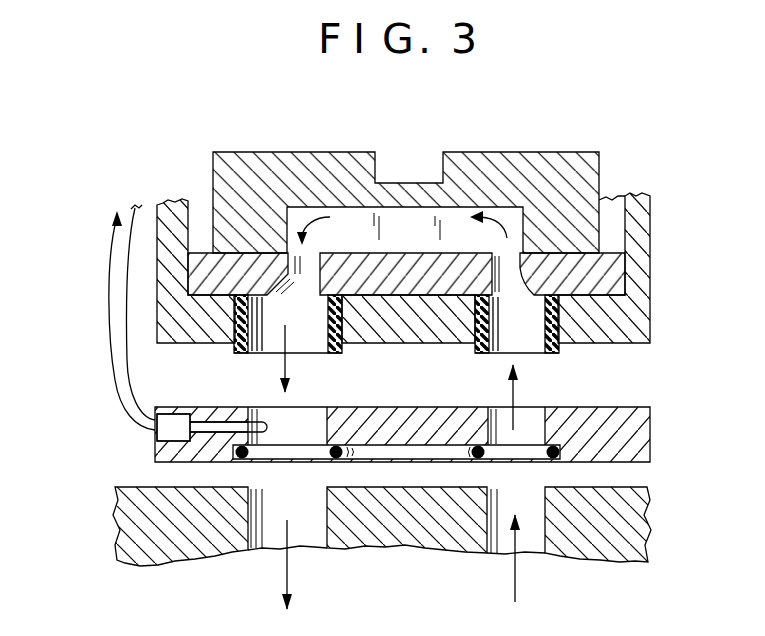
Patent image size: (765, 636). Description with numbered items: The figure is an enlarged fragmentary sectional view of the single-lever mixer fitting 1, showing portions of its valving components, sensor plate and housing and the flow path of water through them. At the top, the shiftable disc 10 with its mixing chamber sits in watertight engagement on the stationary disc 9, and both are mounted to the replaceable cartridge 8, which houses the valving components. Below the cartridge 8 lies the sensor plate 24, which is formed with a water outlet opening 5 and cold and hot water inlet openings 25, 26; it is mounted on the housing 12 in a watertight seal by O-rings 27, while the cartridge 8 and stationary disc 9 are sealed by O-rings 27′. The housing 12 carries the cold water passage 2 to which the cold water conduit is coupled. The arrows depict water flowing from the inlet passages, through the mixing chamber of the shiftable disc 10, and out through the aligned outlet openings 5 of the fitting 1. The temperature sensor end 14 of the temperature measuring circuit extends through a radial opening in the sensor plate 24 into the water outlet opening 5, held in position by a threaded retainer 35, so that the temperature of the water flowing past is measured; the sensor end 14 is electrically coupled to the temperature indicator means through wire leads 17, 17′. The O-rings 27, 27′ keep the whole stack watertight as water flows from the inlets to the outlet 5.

The single-lever mixer fitting 1 is at (403, 223).
The cold water passage 2 is at (532, 542).
The water outlet opening 5 is at (302, 521).
The replaceable cartridge 8 is at (630, 315).
The stationary disc 9 is at (612, 265).
The shiftable disc 10 is at (548, 168).
The housing 12 is at (622, 530).
The temperature sensor end 14 is at (268, 427).
The wire lead 17 is at (120, 400).
The wire lead 17′ is at (112, 360).
The sensor plate 24 is at (628, 438).
The cold water inlet opening 25 is at (545, 427).
The hot water inlet opening 26 is at (262, 420).
The O-ring 27 is at (237, 352).
The O-ring 27′ is at (558, 353).
The threaded retainer 35 is at (172, 423).